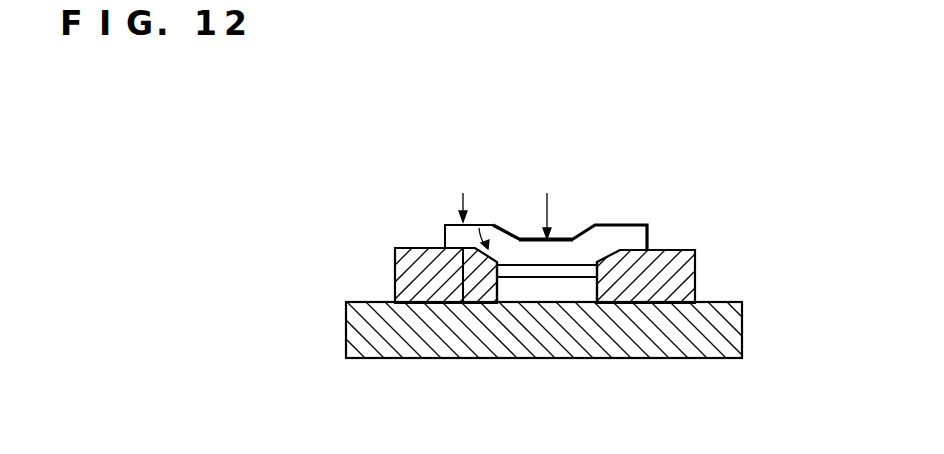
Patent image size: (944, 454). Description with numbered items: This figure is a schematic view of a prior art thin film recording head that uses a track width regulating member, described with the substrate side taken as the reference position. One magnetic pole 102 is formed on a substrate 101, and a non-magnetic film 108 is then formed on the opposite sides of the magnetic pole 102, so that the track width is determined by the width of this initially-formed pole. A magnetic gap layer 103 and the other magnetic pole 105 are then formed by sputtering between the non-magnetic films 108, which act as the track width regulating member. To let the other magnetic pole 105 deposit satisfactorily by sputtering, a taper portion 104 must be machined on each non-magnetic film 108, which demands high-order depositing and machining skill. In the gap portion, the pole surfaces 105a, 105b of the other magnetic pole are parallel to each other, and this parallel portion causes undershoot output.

The substrate 101 is at (720, 335).
The magnetic pole 102 is at (513, 292).
The magnetic gap layer 103 is at (575, 262).
The taper portion 104 is at (457, 219).
The other magnetic pole 105 is at (625, 237).
The pole surface 105a is at (557, 272).
The pole surface 105b is at (523, 234).
The non-magnetic film 108 is at (672, 280).